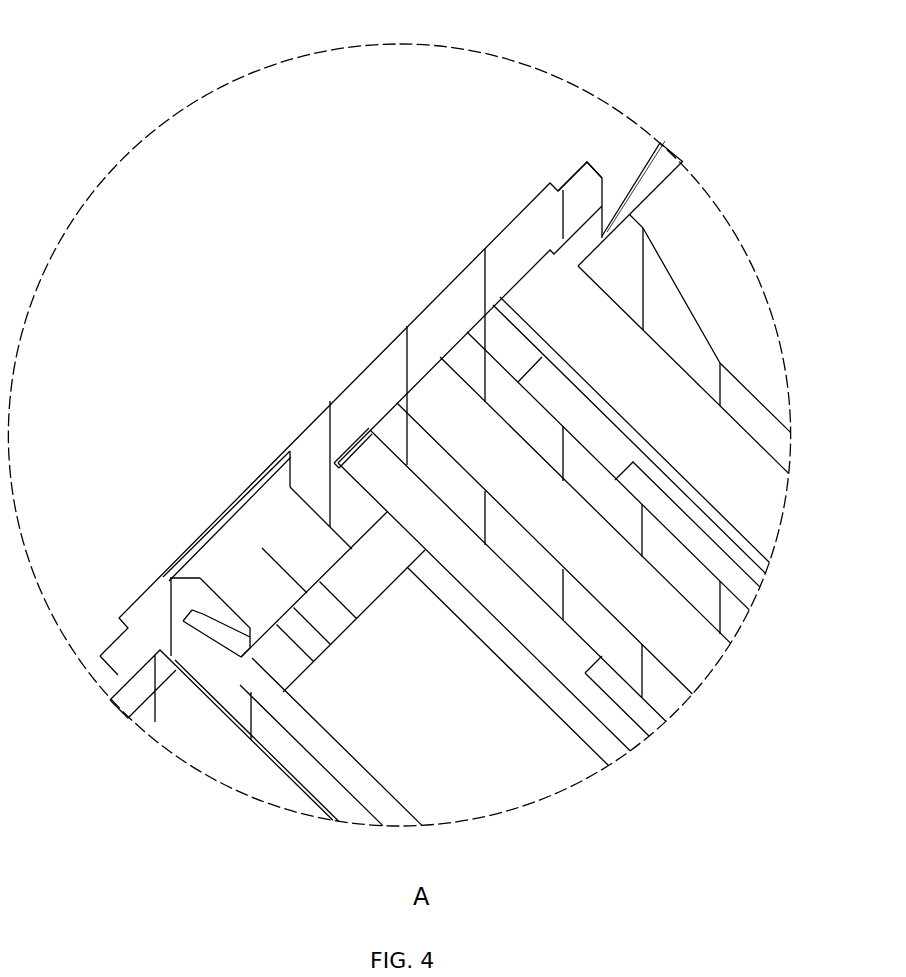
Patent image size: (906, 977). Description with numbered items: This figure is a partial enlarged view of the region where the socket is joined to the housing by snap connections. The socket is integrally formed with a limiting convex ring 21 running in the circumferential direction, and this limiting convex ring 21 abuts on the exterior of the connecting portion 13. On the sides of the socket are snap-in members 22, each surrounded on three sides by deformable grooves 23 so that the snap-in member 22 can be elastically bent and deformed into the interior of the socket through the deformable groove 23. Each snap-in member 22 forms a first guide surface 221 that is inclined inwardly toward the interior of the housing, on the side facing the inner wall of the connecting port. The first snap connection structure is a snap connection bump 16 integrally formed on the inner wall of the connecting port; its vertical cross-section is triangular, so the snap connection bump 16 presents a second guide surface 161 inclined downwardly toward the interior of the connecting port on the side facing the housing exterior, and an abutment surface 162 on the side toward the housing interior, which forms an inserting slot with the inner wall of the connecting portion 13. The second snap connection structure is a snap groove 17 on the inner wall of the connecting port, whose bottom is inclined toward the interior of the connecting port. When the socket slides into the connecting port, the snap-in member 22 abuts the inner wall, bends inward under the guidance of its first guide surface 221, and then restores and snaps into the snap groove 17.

The limiting convex ring 21 is at (583, 172).
The second guide surface 161 is at (601, 210).
The snap connection bump 16 is at (604, 220).
The abutment surface 162 is at (620, 215).
The connecting portion 13 is at (675, 183).
The snap-in member 22 is at (656, 278).
The first guide surface 221 is at (681, 290).
The deformable groove 23 is at (673, 368).
The snap groove 17 is at (160, 672).